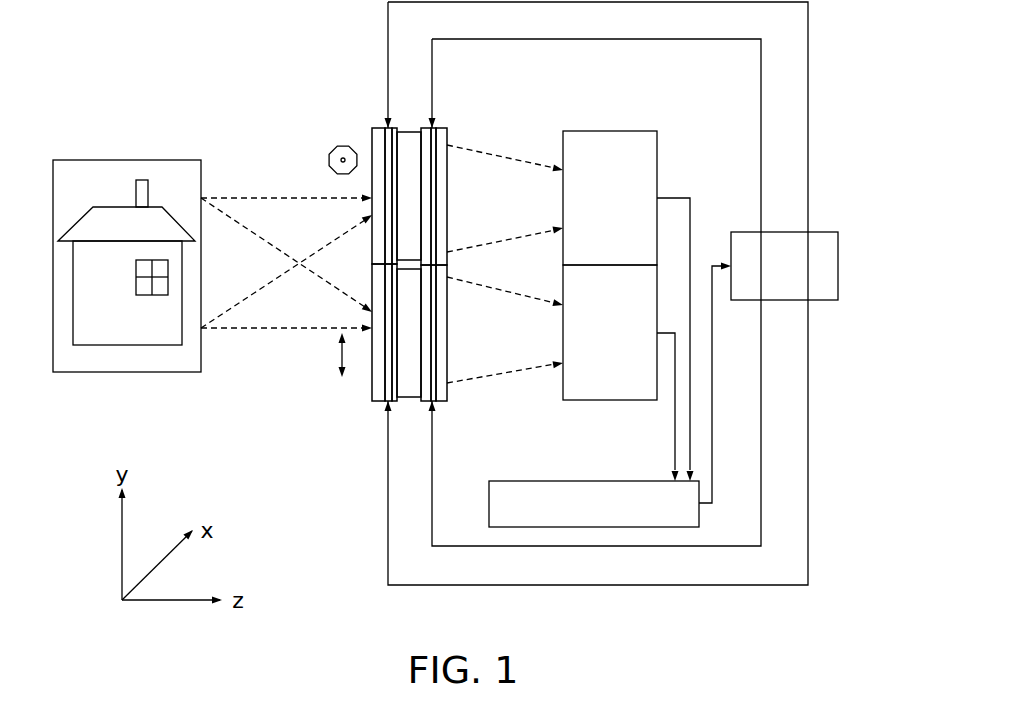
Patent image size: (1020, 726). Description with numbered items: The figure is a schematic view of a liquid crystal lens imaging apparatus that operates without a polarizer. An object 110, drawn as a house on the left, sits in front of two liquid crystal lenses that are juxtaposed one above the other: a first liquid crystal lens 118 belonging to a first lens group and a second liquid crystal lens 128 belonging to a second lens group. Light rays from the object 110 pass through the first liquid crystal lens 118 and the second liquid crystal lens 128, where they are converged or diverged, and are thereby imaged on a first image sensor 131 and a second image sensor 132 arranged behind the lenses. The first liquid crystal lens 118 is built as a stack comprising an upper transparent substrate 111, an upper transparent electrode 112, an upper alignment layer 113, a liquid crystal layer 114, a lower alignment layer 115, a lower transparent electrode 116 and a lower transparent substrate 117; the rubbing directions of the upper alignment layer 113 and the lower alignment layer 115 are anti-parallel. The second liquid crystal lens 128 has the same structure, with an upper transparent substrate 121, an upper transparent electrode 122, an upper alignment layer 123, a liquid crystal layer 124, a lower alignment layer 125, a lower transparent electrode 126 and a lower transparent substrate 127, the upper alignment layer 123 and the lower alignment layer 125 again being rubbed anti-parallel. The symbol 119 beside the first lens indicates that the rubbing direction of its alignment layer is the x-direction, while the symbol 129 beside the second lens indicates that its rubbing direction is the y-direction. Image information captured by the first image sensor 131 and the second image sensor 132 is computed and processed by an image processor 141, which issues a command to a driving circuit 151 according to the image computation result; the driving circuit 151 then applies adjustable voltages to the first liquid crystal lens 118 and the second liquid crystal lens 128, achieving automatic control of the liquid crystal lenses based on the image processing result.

The object 110 is at (170, 160).
The upper transparent substrate 111 is at (381, 133).
The upper transparent electrode 112 is at (388, 150).
The upper alignment layer 113 is at (393, 155).
The liquid crystal layer 114 is at (408, 137).
The lower alignment layer 115 is at (430, 156).
The lower transparent electrode 116 is at (436, 136).
The lower transparent substrate 117 is at (448, 128).
The first liquid crystal lens 118 is at (452, 188).
The rubbing direction symbol of first liquid crystal lens 119 is at (328, 160).
The upper transparent substrate 121 is at (394, 402).
The upper transparent electrode 122 is at (388, 395).
The upper alignment layer 123 is at (376, 382).
The liquid crystal layer 124 is at (408, 385).
The lower alignment layer 125 is at (447, 382).
The lower transparent electrode 126 is at (433, 388).
The lower transparent substrate 127 is at (443, 395).
The second liquid crystal lens 128 is at (452, 315).
The rubbing direction symbol of second liquid crystal lens 129 is at (340, 355).
The first image sensor 131 is at (632, 131).
The second image sensor 132 is at (605, 401).
The image processor 141 is at (610, 527).
The driving circuit 151 is at (828, 300).